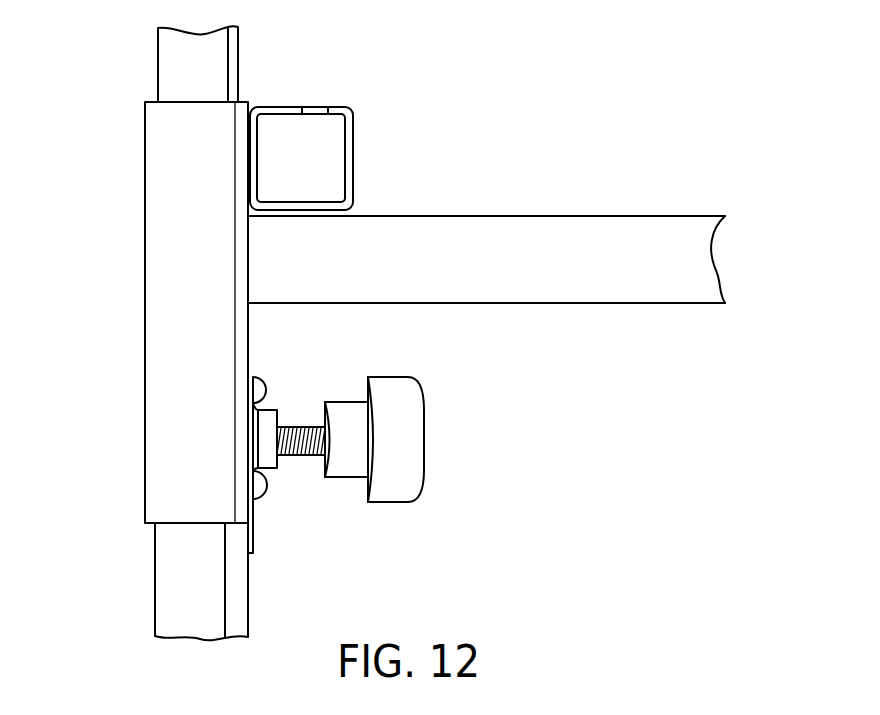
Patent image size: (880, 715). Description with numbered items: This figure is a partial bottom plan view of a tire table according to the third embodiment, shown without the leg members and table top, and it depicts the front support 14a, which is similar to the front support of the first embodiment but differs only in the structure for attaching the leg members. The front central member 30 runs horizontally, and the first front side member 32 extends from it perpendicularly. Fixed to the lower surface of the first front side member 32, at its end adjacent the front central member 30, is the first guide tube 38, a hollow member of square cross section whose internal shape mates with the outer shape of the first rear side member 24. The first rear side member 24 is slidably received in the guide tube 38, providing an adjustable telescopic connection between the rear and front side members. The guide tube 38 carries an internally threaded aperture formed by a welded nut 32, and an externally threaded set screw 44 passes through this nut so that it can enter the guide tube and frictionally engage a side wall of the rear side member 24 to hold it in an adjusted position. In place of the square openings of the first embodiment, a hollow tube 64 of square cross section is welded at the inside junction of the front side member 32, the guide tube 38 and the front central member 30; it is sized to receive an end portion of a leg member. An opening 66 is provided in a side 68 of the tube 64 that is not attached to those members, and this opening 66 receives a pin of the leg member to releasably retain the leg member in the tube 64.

The front support 14a is at (641, 240).
The first rear side member 24 is at (153, 582).
The front central member 30 is at (644, 280).
The first front side member 32 is at (170, 62).
The first guide tube 38 is at (165, 155).
The set screw 44 is at (403, 417).
The hollow tube 64 is at (357, 116).
The opening 66 is at (317, 108).
The side 68 is at (273, 108).